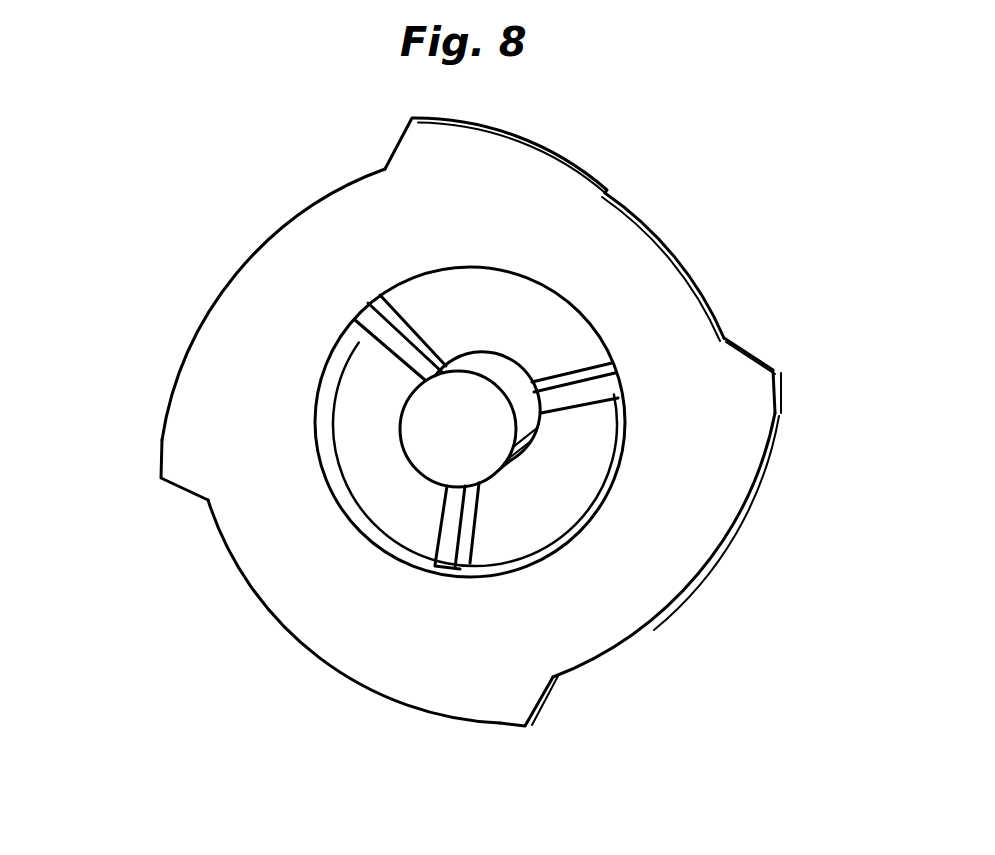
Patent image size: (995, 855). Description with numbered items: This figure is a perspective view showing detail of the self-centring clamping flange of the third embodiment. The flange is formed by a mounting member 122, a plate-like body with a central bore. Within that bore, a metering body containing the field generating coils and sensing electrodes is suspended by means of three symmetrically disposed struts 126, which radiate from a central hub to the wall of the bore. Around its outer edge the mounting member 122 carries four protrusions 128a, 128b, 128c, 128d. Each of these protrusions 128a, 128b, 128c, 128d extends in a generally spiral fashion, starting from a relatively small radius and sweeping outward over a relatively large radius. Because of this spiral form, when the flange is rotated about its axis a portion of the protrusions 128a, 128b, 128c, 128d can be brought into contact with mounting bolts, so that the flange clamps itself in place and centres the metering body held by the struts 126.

The mounting member 122 is at (673, 297).
The struts 126 is at (558, 376).
The protrusion 128a is at (480, 161).
The protrusion 128b is at (750, 405).
The protrusion 128c is at (516, 702).
The protrusion 128d is at (185, 457).